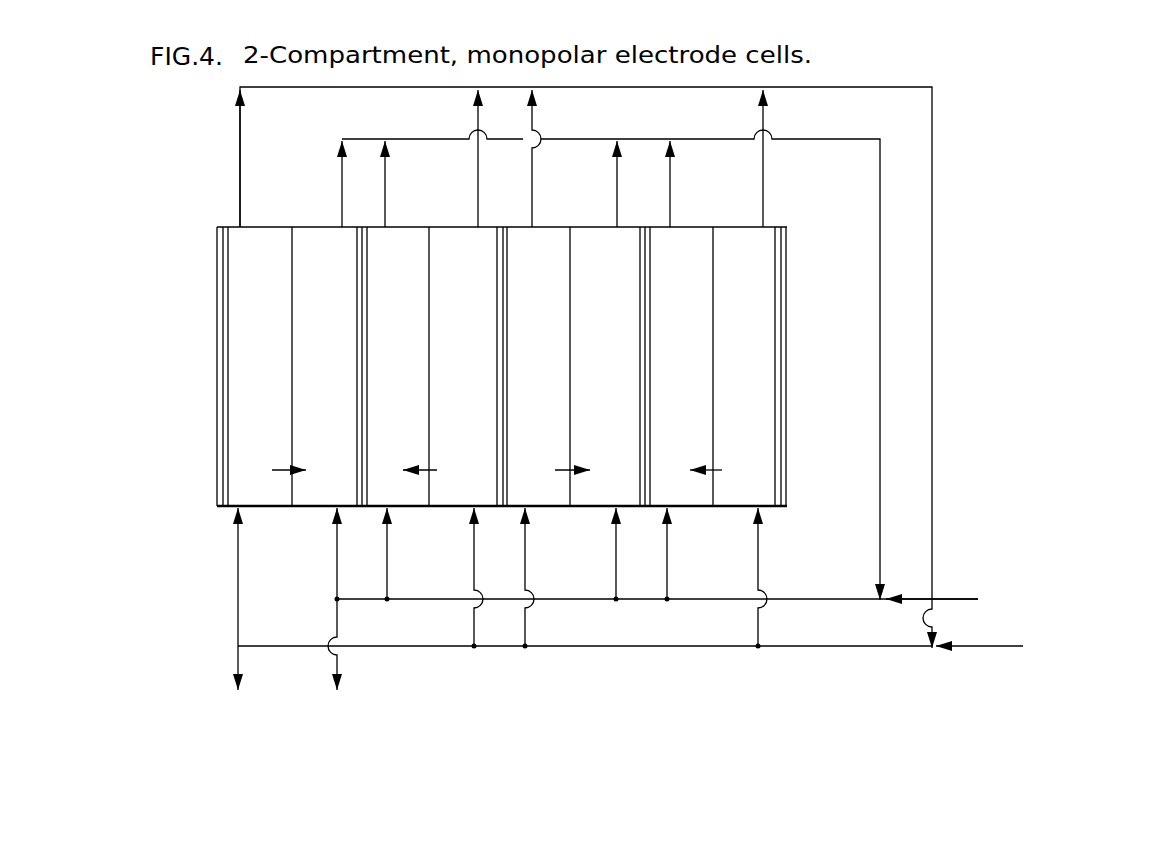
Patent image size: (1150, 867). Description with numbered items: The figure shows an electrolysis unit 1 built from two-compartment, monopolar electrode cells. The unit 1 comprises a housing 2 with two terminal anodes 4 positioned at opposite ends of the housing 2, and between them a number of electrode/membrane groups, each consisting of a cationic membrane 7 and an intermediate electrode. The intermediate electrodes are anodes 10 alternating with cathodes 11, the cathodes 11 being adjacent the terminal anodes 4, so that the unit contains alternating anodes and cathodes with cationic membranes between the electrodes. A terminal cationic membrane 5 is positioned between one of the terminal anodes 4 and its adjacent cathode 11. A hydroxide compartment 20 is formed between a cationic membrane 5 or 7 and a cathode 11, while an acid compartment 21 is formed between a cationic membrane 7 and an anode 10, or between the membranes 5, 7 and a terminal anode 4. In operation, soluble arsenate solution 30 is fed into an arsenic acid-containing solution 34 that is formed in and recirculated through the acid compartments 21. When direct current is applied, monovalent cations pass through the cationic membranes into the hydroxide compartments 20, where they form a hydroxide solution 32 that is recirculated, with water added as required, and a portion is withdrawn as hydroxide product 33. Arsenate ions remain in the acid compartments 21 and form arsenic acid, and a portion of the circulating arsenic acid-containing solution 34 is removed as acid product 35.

The electrolysis unit 1 is at (206, 490).
The housing 2 is at (263, 227).
The terminal anode 4 is at (217, 333).
The terminal cationic membrane 5 is at (713, 358).
The cationic membrane 7 is at (292, 352).
The anode 10 is at (507, 333).
The cathode 11 is at (367, 346).
The hydroxide compartment 20 is at (500, 343).
The acid compartment 21 is at (499, 369).
The soluble arsenate solution 30 is at (1038, 649).
The hydroxide solution 32 is at (690, 569).
The hydroxide product 33 is at (446, 612).
The arsenic acid-containing solution 34 is at (585, 593).
The acid product 35 is at (148, 614).